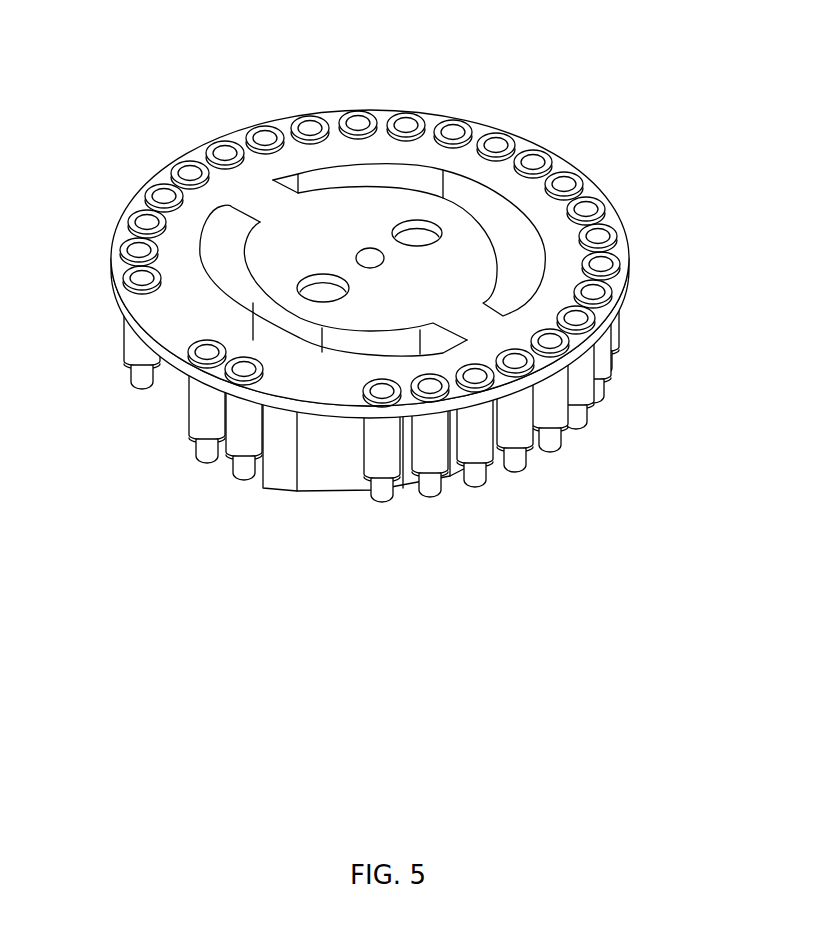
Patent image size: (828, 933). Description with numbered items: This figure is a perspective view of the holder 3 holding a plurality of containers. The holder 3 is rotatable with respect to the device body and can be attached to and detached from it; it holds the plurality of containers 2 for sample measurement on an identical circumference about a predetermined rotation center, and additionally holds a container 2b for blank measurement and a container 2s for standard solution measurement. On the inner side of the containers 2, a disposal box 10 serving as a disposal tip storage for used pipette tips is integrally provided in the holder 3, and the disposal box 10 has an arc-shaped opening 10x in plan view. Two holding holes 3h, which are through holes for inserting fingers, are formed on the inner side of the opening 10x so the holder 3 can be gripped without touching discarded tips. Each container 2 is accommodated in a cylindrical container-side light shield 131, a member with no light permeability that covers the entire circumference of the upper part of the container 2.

The container 2 is at (227, 150).
The container for standard solution measurement 2s is at (202, 453).
The container for blank measurement 2b is at (247, 473).
The holder 3 is at (333, 110).
The holding hole 3h is at (341, 284).
The disposal box 10 is at (458, 191).
The opening 10x is at (417, 166).
The container-side light shield 131 is at (118, 342).